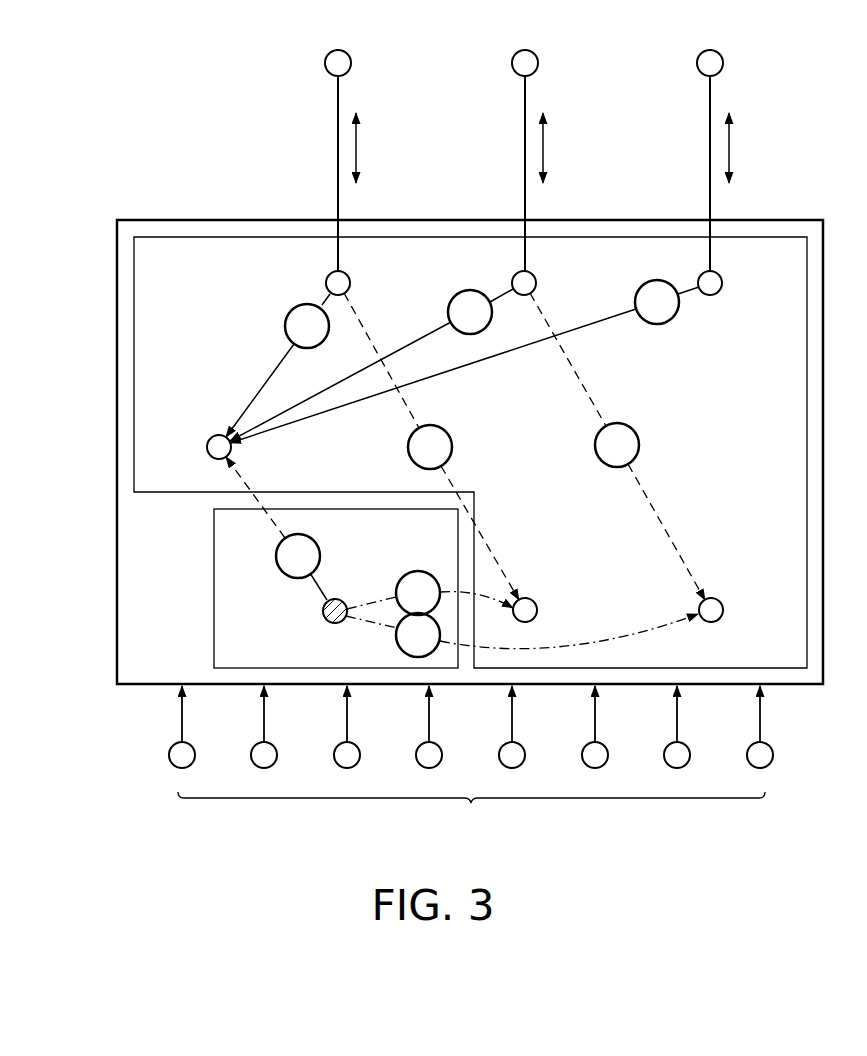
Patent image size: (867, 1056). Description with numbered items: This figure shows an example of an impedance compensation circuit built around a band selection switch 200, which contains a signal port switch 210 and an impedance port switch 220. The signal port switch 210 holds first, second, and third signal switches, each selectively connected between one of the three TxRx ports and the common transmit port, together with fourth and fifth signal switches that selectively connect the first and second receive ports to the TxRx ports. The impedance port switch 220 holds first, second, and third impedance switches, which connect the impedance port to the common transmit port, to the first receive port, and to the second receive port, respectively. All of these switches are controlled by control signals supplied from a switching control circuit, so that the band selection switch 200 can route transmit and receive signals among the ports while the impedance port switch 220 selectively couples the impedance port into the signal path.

The band selection switch 200 is at (178, 220).
The signal port switch 210 is at (248, 237).
The impedance port switch 220 is at (214, 620).